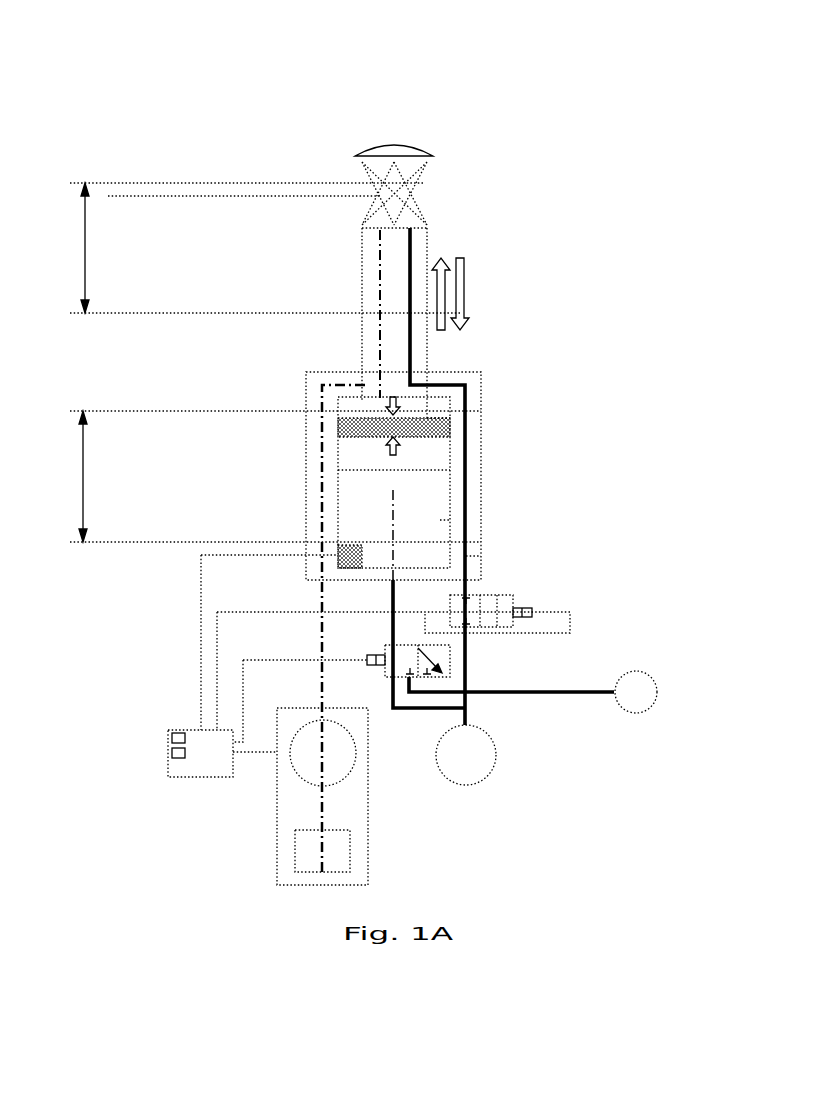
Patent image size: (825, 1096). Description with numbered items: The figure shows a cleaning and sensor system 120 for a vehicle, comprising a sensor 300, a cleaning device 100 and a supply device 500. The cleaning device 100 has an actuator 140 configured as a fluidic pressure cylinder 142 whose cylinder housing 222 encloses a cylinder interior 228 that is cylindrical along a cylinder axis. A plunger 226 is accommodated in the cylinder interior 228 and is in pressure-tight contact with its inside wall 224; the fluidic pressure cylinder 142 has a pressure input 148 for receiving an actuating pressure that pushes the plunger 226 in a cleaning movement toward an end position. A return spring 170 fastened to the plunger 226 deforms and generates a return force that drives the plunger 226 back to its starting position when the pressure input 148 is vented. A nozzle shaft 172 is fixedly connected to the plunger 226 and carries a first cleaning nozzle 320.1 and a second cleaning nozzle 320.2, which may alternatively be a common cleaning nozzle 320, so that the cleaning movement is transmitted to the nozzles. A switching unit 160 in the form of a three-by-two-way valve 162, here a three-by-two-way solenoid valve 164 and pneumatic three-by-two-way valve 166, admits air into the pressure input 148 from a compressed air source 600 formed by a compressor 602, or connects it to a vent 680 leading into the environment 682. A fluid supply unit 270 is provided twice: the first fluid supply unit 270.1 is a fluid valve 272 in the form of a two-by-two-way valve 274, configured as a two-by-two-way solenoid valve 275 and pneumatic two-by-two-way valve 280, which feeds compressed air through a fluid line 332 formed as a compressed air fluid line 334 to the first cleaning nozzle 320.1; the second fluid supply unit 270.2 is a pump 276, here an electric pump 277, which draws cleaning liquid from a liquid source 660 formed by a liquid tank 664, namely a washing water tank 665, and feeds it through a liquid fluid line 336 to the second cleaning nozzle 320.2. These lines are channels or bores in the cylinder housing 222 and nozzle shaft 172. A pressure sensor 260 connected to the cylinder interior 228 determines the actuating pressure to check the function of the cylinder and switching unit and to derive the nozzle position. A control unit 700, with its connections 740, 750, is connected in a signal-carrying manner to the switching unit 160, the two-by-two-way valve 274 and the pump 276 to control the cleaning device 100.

The cleaning device 100 is at (553, 39).
The cleaning and sensor system 120 is at (594, 50).
The sensor 300 is at (394, 150).
The cleaning nozzle 320 is at (378, 202).
The first cleaning nozzle 320.1 is at (405, 210).
The second cleaning nozzle 320.2 is at (384, 213).
The nozzle shaft 172 is at (360, 331).
The return spring 170 is at (437, 403).
The actuator 140 is at (472, 469).
The fluidic pressure cylinder 142 is at (498, 393).
The plunger 226 is at (450, 430).
The fluid line 332 is at (447, 628).
The compressed air fluid line 334 is at (467, 445).
The liquid fluid line 336 is at (320, 443).
The cylinder interior 228 is at (440, 470).
The inside wall 224 is at (340, 486).
The pressure input 148 is at (536, 507).
The cylinder housing 222 is at (476, 558).
The pressure sensor 260 is at (351, 546).
The fluid supply unit 270 is at (486, 695).
The first fluid supply unit 270.1 is at (486, 590).
The fluid valve 272 is at (486, 590).
The 2/2-way valve 274 is at (486, 590).
The 2/2-way solenoid valve 275 is at (486, 590).
The pneumatic 2/2-way valve 280 is at (513, 607).
The second fluid supply unit 270.2 is at (441, 781).
The pump 276 is at (441, 781).
The electric pump 277 is at (330, 778).
The switching unit 160 is at (489, 657).
The 3/2-way valve 162 is at (489, 657).
The 3/2-way solenoid valve 164 is at (489, 657).
The pneumatic 3/2-way valve 166 is at (442, 672).
The vent 680 is at (685, 700).
The environment 682 is at (645, 701).
The compressed air source 600 is at (540, 757).
The compressor 602 is at (497, 752).
The interface 740 is at (172, 738).
The interface 750 is at (172, 752).
The control unit 700 is at (178, 770).
The liquid tank 664 is at (236, 850).
The washing water tank 665 is at (296, 862).
The liquid source 660 is at (277, 858).
The supply device 500 is at (545, 865).